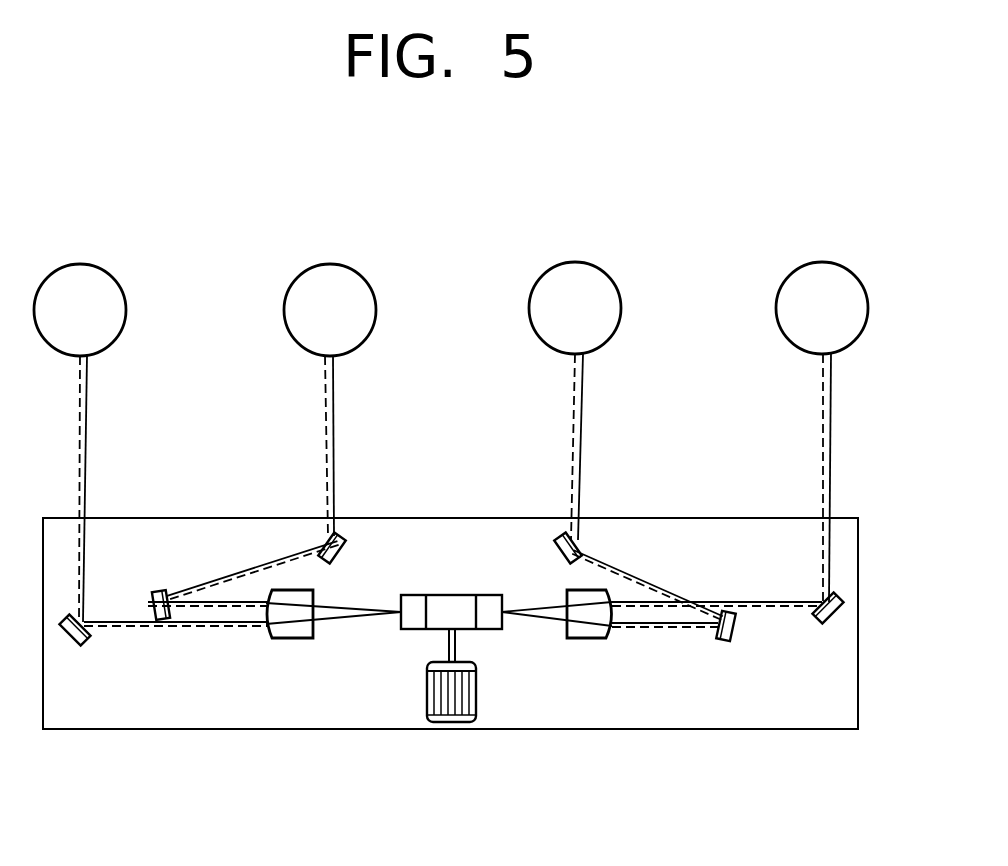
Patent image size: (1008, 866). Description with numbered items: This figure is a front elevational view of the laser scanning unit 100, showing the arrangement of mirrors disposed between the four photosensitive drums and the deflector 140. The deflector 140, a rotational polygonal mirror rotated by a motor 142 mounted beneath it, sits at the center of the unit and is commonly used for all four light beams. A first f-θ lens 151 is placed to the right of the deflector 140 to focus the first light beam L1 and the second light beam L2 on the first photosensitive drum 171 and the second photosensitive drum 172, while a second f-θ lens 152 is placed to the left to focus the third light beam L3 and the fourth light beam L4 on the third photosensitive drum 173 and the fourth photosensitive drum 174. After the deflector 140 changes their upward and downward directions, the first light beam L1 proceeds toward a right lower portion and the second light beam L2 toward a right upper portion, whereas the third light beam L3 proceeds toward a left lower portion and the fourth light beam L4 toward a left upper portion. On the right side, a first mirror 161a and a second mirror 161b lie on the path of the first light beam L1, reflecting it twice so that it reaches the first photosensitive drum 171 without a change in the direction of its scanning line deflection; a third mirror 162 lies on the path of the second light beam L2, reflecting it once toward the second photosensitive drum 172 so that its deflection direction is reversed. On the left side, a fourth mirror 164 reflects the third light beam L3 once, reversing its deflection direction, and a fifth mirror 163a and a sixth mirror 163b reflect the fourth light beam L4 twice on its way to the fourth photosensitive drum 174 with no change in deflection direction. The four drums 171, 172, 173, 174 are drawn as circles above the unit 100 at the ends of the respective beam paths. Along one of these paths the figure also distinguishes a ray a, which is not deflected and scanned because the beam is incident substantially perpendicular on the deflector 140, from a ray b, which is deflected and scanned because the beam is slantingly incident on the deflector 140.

The laser scanning unit 100 is at (595, 730).
The deflector 140 is at (453, 595).
The motor 142 is at (452, 724).
The first f-θ lens 151 is at (591, 639).
The second f-θ lens 152 is at (291, 639).
The first mirror 161a is at (725, 641).
The second mirror 161b is at (560, 535).
The third mirror 162 is at (825, 627).
The fifth mirror 163a is at (157, 592).
The sixth mirror 163b is at (345, 532).
The fourth mirror 164 is at (80, 646).
The first photosensitive drum 171 is at (575, 262).
The second photosensitive drum 172 is at (822, 262).
The third photosensitive drum 173 is at (80, 264).
The fourth photosensitive drum 174 is at (330, 264).
The first light beam L1 is at (690, 628).
The second light beam L2 is at (778, 608).
The third light beam L3 is at (143, 628).
The fourth light beam L4 is at (203, 608).
The ray that is not deflected and scanned a is at (822, 414).
The ray that is deflected and scanned b is at (832, 392).